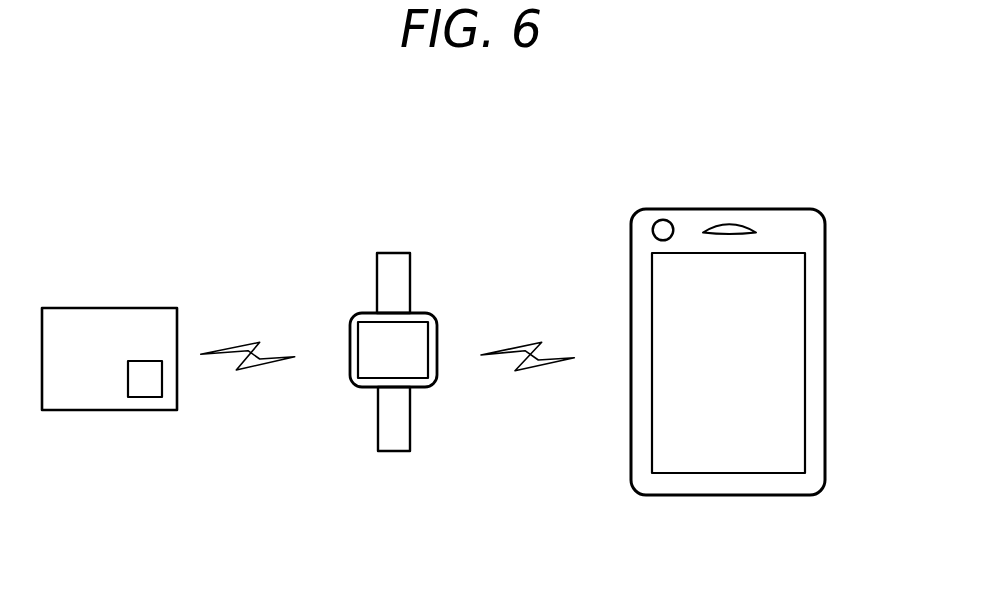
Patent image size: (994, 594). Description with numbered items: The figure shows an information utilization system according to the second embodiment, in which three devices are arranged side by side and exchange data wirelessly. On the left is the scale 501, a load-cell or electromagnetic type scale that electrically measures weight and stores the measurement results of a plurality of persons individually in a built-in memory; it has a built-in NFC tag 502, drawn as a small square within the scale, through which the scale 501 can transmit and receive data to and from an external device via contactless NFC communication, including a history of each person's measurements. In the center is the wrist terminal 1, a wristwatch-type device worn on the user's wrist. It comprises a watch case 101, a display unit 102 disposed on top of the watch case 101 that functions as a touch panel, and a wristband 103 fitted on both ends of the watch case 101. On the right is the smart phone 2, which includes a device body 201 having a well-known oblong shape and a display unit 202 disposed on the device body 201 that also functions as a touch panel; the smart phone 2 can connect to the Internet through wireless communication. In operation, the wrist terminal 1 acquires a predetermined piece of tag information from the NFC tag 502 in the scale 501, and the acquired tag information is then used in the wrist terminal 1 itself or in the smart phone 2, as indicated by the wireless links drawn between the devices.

The wrist terminal 1 is at (415, 348).
The watch case 101 is at (437, 335).
The display unit 102 is at (415, 365).
The wristband 103 is at (377, 423).
The smart phone 2 is at (767, 320).
The device body 201 is at (826, 292).
The display unit 202 is at (768, 373).
The scale 501 is at (117, 307).
The NFC tag 502 is at (145, 385).